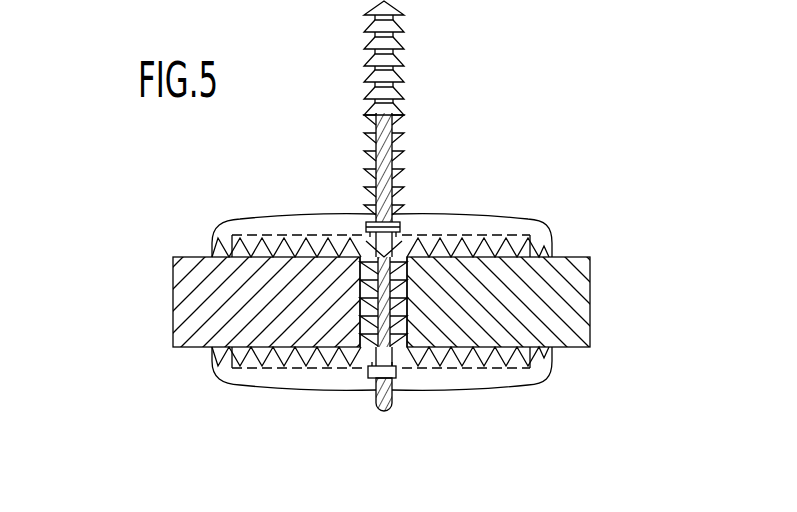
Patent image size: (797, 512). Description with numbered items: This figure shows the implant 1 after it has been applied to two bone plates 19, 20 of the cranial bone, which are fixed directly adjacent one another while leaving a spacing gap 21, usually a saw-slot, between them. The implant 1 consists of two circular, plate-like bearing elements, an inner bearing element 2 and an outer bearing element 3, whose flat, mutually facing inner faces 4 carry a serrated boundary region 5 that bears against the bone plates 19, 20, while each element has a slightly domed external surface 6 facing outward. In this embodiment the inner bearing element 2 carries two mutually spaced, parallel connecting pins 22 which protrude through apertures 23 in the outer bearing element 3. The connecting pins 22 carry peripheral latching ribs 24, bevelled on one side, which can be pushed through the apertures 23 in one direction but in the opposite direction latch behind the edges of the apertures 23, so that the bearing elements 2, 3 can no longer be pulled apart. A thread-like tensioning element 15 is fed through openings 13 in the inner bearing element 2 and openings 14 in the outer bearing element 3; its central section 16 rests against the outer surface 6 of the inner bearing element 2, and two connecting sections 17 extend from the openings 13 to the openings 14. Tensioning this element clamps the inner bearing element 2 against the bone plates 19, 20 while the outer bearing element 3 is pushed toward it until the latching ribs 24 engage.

The implant 1 is at (560, 197).
The inner bearing element 2 is at (216, 395).
The outer bearing element 3 is at (228, 208).
The inner faces 4 is at (308, 240).
The serrated boundary region 5 is at (546, 268).
The external surface 6 is at (500, 215).
The openings 13 is at (370, 410).
The openings 14 is at (406, 222).
The tensioning element 15 is at (412, 122).
The central section 16 is at (389, 408).
The connecting sections 17 is at (415, 358).
The bone plate 19 is at (180, 257).
The bone plate 20 is at (564, 306).
The spacing gap 21 is at (355, 245).
The connecting pins 22 is at (355, 64).
The apertures 23 is at (373, 222).
The latching ribs 24 is at (401, 72).